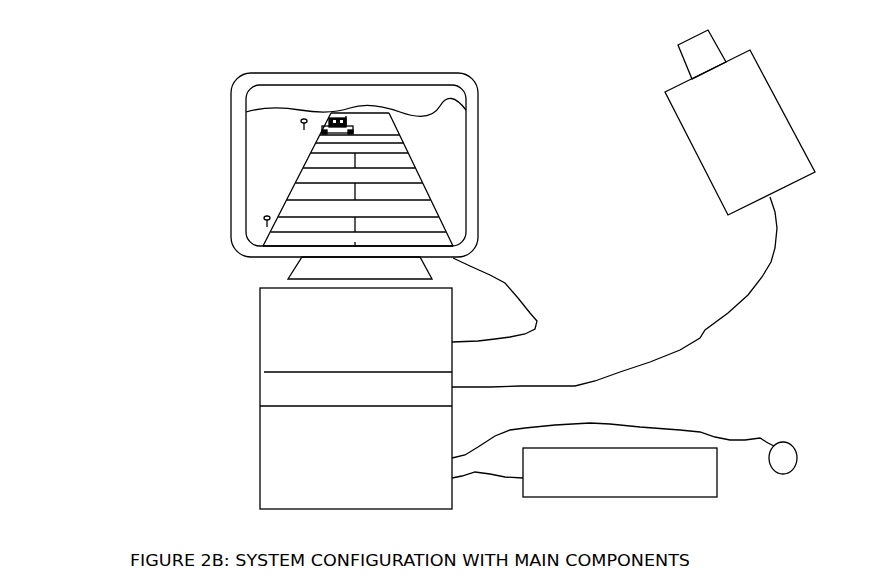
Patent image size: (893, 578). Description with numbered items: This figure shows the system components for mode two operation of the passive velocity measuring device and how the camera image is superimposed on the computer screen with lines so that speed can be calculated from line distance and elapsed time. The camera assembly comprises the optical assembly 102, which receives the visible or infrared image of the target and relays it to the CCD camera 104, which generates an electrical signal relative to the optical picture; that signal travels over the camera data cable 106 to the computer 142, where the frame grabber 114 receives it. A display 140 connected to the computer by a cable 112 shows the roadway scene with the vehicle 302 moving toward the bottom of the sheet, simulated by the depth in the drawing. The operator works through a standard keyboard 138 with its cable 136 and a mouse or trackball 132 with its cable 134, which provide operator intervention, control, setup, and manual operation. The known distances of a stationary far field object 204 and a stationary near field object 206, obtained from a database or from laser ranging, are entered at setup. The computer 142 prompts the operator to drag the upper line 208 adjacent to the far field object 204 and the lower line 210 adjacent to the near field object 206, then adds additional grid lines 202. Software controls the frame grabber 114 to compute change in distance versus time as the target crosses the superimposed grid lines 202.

The optical assembly 102 is at (675, 58).
The CCD camera 104 is at (683, 142).
The camera data cable 106 is at (724, 311).
The monitor cable 112 is at (504, 275).
The frame grabber 114 is at (356, 389).
The mouse or trackball 132 is at (791, 479).
The mouse cable 134 is at (645, 419).
The keyboard cable 136 is at (480, 481).
The keyboard 138 is at (686, 462).
The display monitor 140 is at (231, 117).
The computer 142 is at (259, 390).
The grid lines 202 is at (330, 178).
The stationary far field object 204 is at (300, 128).
The stationary near field object 206 is at (262, 224).
The upper line 208 is at (378, 132).
The lower line 210 is at (297, 238).
The vehicle 302 is at (331, 112).